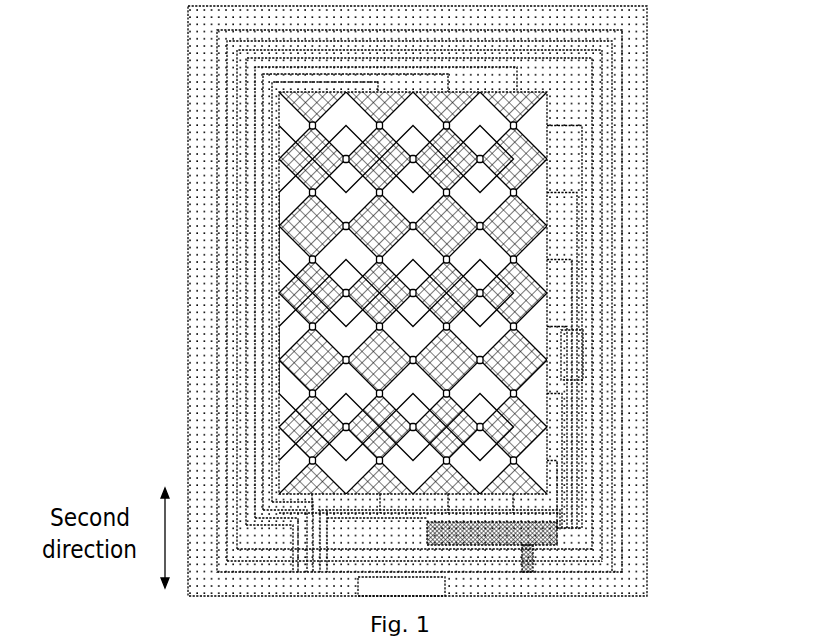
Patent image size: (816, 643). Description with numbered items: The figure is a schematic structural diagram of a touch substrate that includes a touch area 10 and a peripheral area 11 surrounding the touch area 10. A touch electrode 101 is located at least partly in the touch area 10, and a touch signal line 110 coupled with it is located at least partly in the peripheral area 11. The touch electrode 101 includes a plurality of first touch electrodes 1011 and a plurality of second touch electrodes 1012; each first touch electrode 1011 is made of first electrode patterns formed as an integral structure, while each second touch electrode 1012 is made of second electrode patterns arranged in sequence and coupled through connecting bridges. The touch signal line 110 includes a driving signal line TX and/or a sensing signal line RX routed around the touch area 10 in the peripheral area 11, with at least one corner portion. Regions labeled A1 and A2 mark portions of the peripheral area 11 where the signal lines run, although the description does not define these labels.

The touch area 10 is at (547, 92).
The peripheral area 11 is at (617, 248).
The touch electrode 101 is at (102, 152).
The first touch electrode 1011 is at (305, 156).
The second touch electrode 1012 is at (293, 262).
The touch signal line 110 is at (257, 442).
The bonding pad area A1 is at (543, 543).
The lead routing area A2 is at (583, 353).